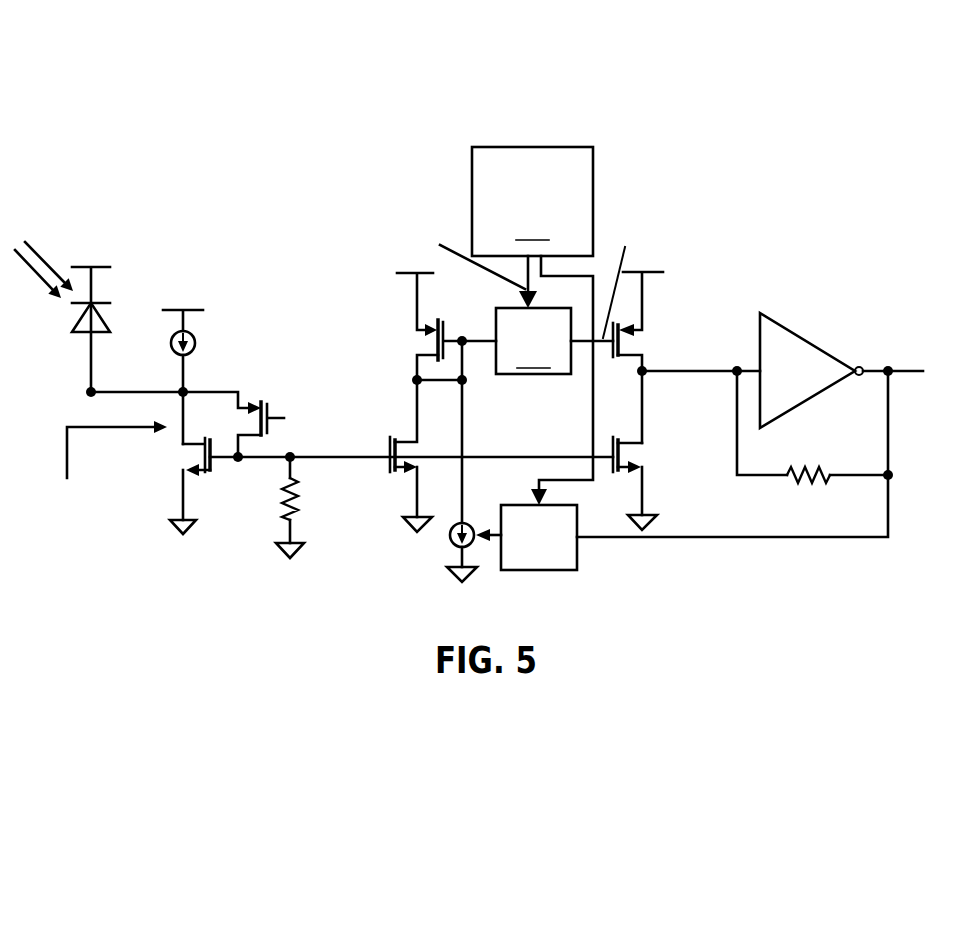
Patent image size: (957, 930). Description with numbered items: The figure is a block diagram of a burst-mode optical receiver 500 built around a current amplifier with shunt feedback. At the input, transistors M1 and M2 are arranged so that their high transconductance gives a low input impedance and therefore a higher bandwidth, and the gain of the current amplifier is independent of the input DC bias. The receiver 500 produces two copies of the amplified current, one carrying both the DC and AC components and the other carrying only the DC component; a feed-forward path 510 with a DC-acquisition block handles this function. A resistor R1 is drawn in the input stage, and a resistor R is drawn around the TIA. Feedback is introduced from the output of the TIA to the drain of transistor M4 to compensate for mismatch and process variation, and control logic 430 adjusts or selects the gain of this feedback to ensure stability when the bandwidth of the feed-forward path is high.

The burst-mode optical receiver 500 is at (777, 178).
The control logic 430 is at (532, 201).
The feed-forward path 510 is at (533, 341).
The transistor M1 is at (190, 486).
The transistor M2 is at (263, 414).
The transistor M4 is at (388, 456).
The resistor R1 is at (278, 507).
The resistor R is at (815, 439).